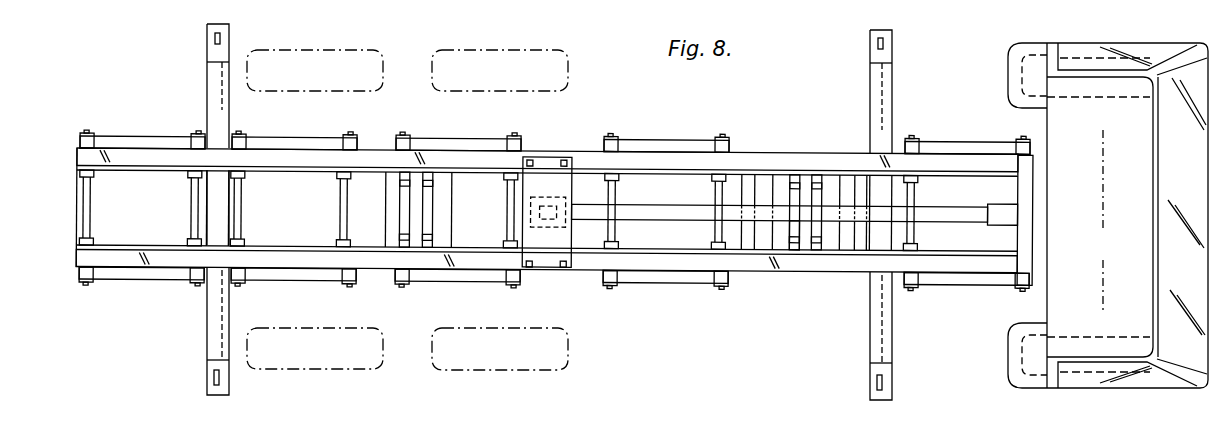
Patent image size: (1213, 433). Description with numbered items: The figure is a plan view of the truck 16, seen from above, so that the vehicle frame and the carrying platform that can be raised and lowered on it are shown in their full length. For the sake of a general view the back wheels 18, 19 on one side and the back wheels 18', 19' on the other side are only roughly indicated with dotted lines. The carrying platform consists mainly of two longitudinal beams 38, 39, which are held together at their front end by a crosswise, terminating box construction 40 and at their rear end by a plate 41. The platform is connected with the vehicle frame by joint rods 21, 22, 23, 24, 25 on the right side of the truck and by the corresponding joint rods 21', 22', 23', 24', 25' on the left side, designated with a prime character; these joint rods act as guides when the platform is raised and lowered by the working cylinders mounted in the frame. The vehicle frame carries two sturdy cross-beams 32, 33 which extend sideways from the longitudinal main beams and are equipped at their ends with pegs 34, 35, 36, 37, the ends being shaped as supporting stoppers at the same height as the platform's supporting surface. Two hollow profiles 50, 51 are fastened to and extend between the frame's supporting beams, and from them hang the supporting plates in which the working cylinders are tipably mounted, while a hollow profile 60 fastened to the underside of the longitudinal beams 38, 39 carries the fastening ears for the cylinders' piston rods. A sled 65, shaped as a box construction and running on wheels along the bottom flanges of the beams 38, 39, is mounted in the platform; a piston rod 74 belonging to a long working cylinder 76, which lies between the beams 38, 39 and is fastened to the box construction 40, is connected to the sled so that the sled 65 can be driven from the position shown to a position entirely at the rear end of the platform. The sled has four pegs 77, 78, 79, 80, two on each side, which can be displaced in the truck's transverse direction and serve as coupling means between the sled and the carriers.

The truck 16 is at (1058, 292).
The back wheel 18 is at (315, 367).
The back wheel 18' is at (315, 70).
The back wheel 19 is at (496, 363).
The back wheel 19' is at (500, 70).
The joint rod 21 is at (141, 294).
The joint rod 21' is at (142, 124).
The joint rod 22 is at (293, 292).
The joint rod 22' is at (294, 124).
The joint rod 23 is at (457, 295).
The joint rod 23' is at (458, 125).
The joint rod 24 is at (665, 296).
The joint rod 24' is at (666, 125).
The joint rod 25 is at (966, 299).
The joint rod 25' is at (967, 126).
The cross-beam 32 is at (214, 333).
The cross-beam 33 is at (870, 338).
The peg 34 is at (213, 378).
The peg 35 is at (212, 42).
The peg 36 is at (892, 378).
The peg 37 is at (892, 42).
The longitudinal beam 38 is at (385, 265).
The longitudinal beam 39 is at (368, 154).
The box construction 40 is at (1030, 197).
The plate 41 is at (84, 205).
The hollow profile 50 is at (792, 240).
The hollow profile 51 is at (822, 232).
The hollow profile 60 is at (800, 186).
The sled 65 is at (543, 173).
The piston rod 74 is at (546, 225).
The working cylinder 76 is at (690, 214).
The peg 77 is at (531, 270).
The peg 78 is at (566, 268).
The peg 79 is at (530, 157).
The peg 80 is at (567, 157).